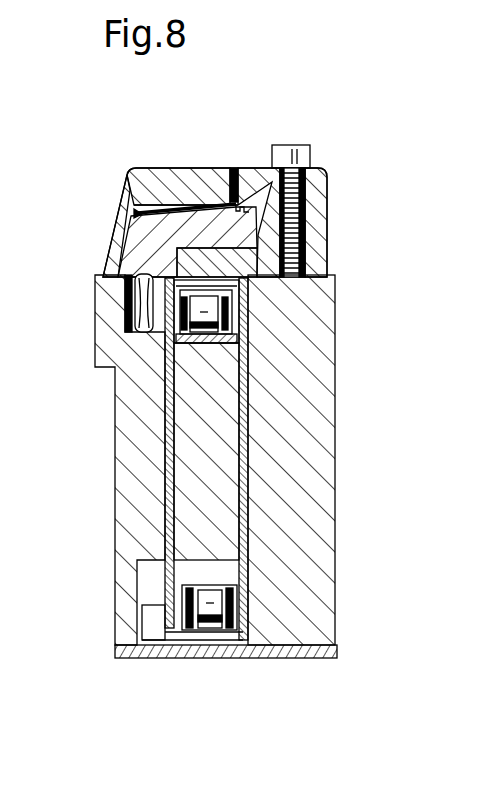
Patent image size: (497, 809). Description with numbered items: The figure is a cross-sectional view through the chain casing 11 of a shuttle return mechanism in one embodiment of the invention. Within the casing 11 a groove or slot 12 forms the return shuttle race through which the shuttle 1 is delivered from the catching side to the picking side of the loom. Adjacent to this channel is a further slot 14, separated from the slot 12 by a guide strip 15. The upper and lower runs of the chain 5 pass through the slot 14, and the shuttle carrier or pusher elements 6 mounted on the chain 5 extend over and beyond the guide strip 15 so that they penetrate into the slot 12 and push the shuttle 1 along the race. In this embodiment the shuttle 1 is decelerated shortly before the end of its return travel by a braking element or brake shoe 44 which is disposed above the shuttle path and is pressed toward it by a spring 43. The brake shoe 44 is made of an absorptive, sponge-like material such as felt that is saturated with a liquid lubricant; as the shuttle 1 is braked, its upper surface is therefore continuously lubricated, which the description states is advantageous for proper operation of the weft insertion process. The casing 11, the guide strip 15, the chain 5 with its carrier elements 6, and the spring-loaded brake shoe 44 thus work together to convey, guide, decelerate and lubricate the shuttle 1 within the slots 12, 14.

The shuttle 1 is at (134, 313).
The chain 5 is at (246, 324).
The carrier element 6 is at (252, 292).
The casing 11 is at (320, 502).
The slot 12 is at (150, 335).
The further slot 14 is at (198, 348).
The guide strip 15 is at (171, 494).
The spring 43 is at (179, 210).
The brake shoe 44 is at (136, 212).